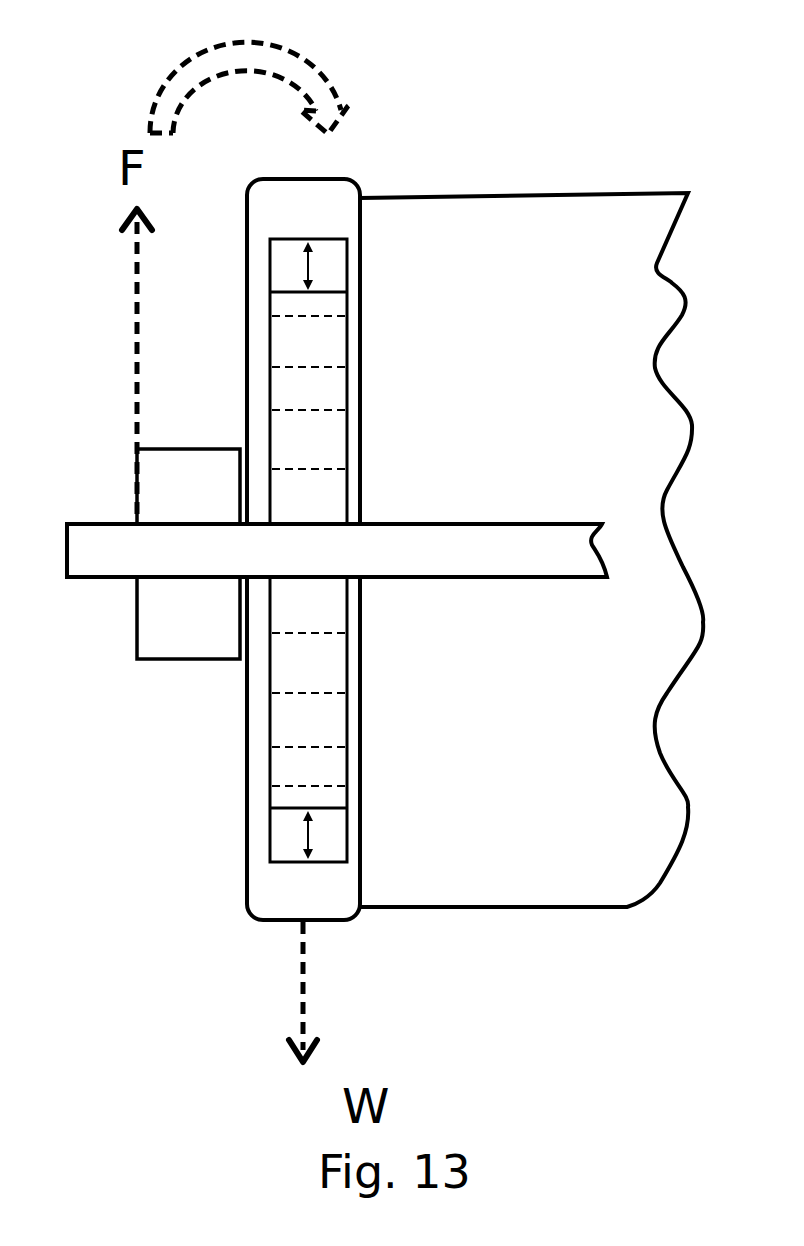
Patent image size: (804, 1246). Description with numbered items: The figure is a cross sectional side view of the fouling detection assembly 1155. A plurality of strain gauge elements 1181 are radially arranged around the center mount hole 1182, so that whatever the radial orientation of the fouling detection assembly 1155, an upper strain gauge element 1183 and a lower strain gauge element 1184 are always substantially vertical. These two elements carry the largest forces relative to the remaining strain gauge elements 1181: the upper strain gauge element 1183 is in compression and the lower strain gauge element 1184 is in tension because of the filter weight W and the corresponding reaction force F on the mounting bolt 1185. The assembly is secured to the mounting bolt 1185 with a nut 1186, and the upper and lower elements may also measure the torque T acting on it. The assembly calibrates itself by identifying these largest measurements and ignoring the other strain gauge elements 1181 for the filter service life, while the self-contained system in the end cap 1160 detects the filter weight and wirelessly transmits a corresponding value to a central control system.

The fouling detection assembly 1155 is at (343, 152).
The end cap 1160 is at (247, 693).
The strain gauge elements 1181 is at (322, 470).
The center mount hole 1182 is at (361, 520).
The upper strain gauge element 1183 is at (331, 240).
The lower strain gauge element 1184 is at (270, 835).
The mounting bolt 1185 is at (430, 578).
The nut 1186 is at (187, 662).